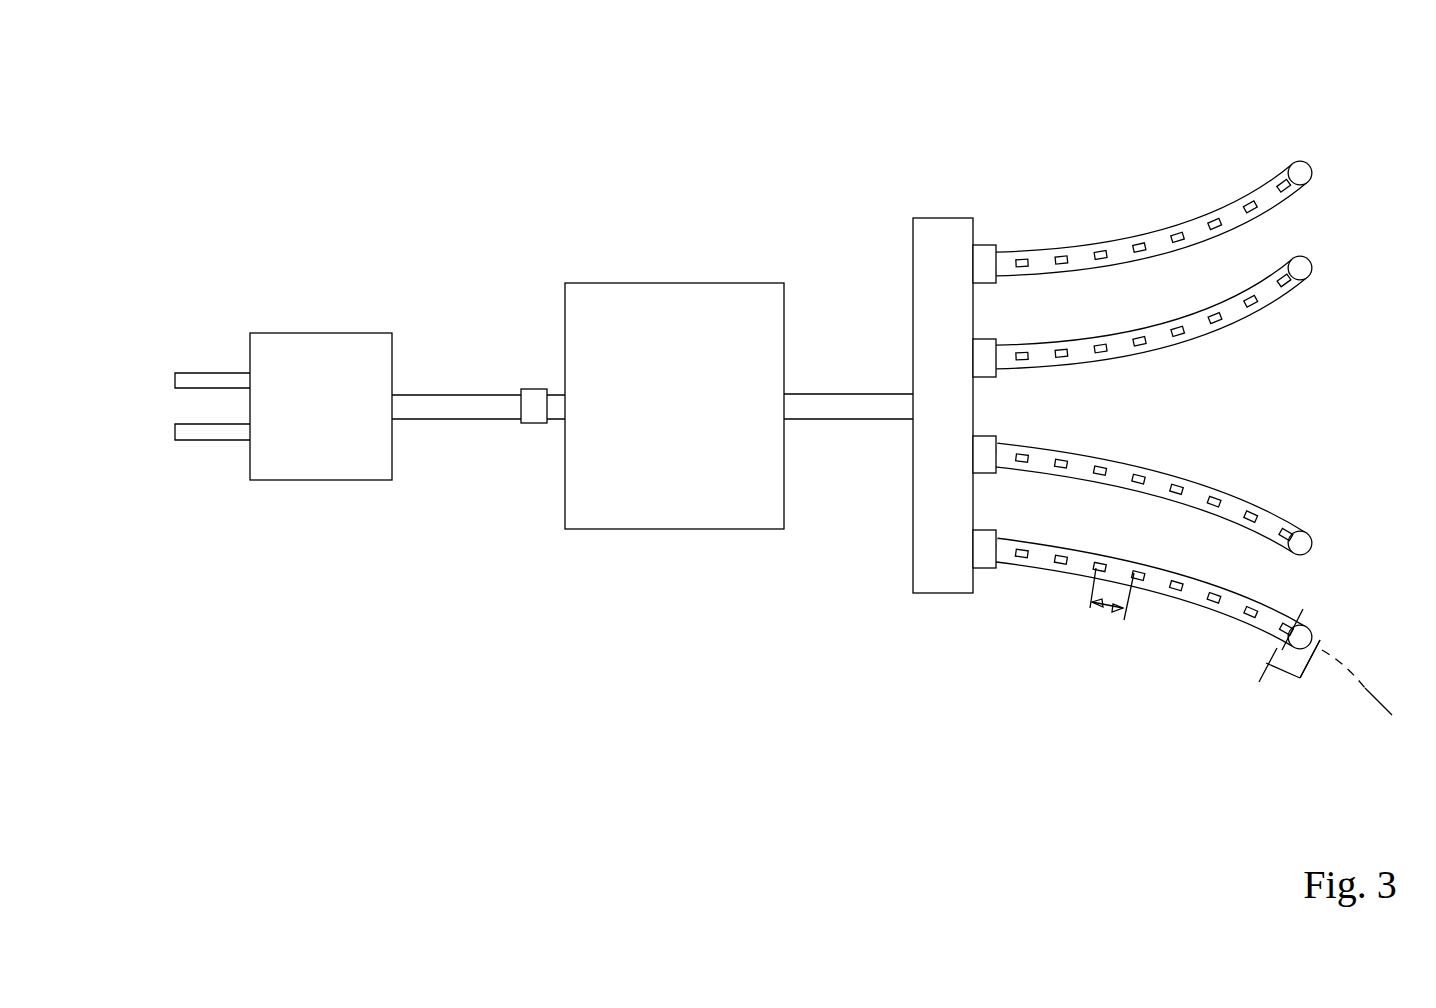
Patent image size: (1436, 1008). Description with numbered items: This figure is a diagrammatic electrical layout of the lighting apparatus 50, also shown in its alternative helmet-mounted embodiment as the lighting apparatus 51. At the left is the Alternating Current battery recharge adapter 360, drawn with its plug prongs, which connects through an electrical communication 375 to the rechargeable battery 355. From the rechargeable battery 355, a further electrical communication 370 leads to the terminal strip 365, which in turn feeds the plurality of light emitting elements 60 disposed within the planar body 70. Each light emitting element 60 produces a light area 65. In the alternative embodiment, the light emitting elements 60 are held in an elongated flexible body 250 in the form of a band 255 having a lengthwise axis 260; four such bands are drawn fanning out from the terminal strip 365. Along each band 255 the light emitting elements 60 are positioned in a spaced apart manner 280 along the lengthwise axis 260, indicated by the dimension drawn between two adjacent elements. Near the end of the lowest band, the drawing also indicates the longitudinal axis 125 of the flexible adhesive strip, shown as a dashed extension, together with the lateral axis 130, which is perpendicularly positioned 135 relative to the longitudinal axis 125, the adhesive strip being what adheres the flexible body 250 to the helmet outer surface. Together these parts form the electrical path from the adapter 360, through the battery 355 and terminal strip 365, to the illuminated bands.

The lighting apparatus 50 is at (1343, 75).
The lighting apparatus 51 is at (1280, 117).
The light emitting element 60 is at (1115, 178).
The light area 65 is at (1098, 250).
The planar body 70 is at (1154, 182).
The elongated flexible body 250 is at (1154, 182).
The band 255 is at (1003, 434).
The spaced apart manner 280 is at (1107, 606).
The lateral axis 130 is at (1265, 661).
The perpendicularly positioned 135 is at (1302, 677).
The longitudinal axis 125 is at (1363, 636).
The lengthwise axis 260 is at (1367, 688).
The terminal strip 365 is at (942, 218).
The electrical communication 370 is at (838, 419).
The rechargeable battery 355 is at (672, 283).
The electrical communication 375 is at (468, 419).
The Alternating Current battery recharge adapter 360 is at (292, 333).